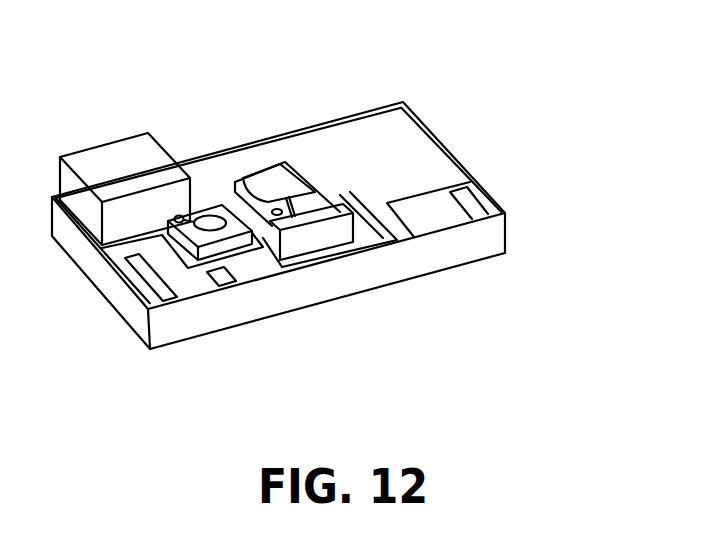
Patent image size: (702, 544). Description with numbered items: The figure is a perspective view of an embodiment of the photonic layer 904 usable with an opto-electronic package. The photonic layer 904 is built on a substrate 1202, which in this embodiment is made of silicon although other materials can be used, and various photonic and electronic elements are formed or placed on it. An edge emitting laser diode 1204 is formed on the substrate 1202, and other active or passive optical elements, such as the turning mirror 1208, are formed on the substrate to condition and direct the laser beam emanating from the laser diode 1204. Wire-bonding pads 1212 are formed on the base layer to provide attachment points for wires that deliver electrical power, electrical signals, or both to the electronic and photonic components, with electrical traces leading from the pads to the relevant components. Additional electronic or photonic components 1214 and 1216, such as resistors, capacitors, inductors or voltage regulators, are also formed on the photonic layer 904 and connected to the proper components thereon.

The photonic layer 904 is at (495, 84).
The substrate 1202 is at (430, 258).
The edge emitting laser diode 1204 is at (283, 183).
The turning mirror 1208 is at (313, 240).
The wire-bonding pads 1212 is at (158, 287).
The additional electronic or photonic component 1214 is at (122, 162).
The additional electronic or photonic component 1216 is at (222, 213).